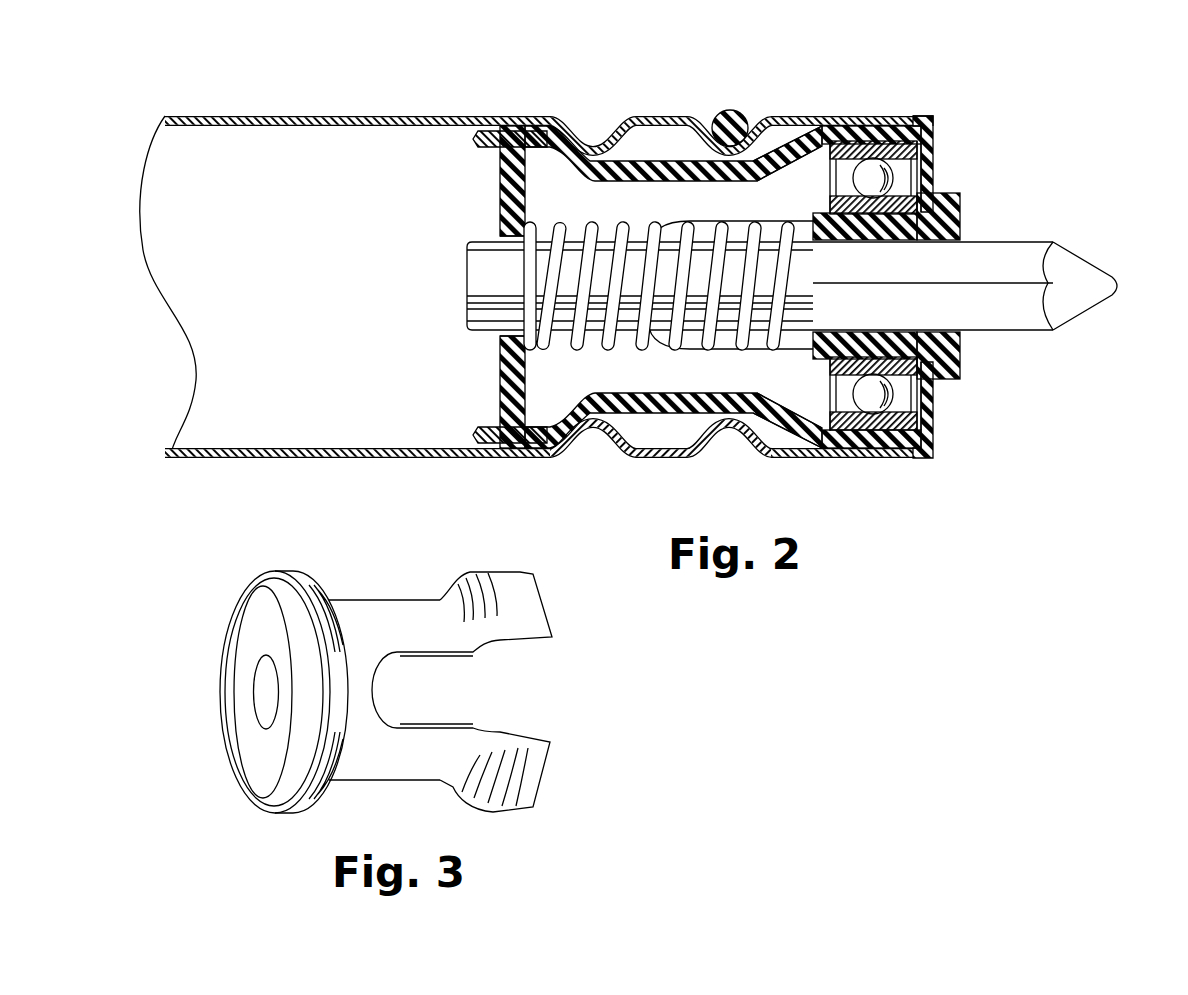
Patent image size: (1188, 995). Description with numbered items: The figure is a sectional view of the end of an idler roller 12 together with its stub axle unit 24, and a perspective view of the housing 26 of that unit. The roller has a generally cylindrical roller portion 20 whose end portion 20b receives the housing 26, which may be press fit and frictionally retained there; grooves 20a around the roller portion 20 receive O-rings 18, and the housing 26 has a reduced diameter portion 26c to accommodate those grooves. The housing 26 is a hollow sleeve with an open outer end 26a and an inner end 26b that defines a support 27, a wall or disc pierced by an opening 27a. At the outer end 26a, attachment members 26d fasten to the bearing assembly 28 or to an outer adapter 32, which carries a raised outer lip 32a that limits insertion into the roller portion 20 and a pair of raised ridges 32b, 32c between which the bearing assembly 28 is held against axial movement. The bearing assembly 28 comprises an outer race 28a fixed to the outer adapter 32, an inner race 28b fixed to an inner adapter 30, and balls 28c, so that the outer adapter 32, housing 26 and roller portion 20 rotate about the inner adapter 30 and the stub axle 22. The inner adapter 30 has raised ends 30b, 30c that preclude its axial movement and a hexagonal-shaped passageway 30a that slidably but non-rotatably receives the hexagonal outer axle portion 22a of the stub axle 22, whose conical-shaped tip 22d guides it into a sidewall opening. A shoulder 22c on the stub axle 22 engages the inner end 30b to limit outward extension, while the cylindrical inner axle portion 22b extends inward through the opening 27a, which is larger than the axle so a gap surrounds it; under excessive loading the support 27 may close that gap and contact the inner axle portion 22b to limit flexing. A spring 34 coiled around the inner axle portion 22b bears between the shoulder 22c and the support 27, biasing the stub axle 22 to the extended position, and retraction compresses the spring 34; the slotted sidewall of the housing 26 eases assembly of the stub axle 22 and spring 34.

In FIG. 2, the idler roller 12 is at (311, 277).
In FIG. 2, the O-ring 18 is at (728, 110).
In FIG. 2, the roller portion 20 is at (227, 449).
In FIG. 2, the grooves 20a is at (598, 450).
In FIG. 2, the end portion 20b is at (797, 100).
In FIG. 2, the stub axle 22 is at (1065, 180).
In FIG. 2, the outer axle portion 22a is at (997, 322).
In FIG. 2, the inner axle portion 22b is at (477, 301).
In FIG. 2, the shoulder 22c is at (795, 303).
In FIG. 2, the conical-shaped tip 22d is at (1079, 265).
In FIG. 2, the stub axle unit 24 is at (1019, 138).
In FIG. 2, the housing 26 is at (669, 424).
In FIG. 3, the housing 26 is at (407, 583).
In FIG. 3, the open outer end 26a is at (548, 618).
In FIG. 2, the inner end 26b is at (493, 413).
In FIG. 3, the inner end 26b is at (245, 737).
In FIG. 2, the reduced diameter portion 26c is at (650, 413).
In FIG. 2, the attachment members 26d is at (853, 450).
In FIG. 2, the support 27 is at (500, 380).
In FIG. 3, the support 27 is at (248, 652).
In FIG. 2, the opening 27a is at (497, 333).
In FIG. 3, the opening 27a is at (258, 692).
In FIG. 2, the bearing assembly 28 is at (933, 148).
In FIG. 2, the outer race 28a is at (880, 350).
In FIG. 2, the inner race 28b is at (907, 432).
In FIG. 2, the balls 28c is at (880, 178).
In FIG. 2, the inner adapter 30 is at (950, 365).
In FIG. 2, the hexagonal-shaped passageway 30a is at (920, 240).
In FIG. 2, the inner end 30b is at (840, 240).
In FIG. 2, the raised end 30c is at (950, 383).
In FIG. 2, the outer adapter 32 is at (895, 440).
In FIG. 2, the raised outer lip 32a is at (917, 117).
In FIG. 2, the raised ridge 32b is at (827, 124).
In FIG. 2, the raised ridge 32c is at (935, 125).
In FIG. 2, the spring 34 is at (517, 273).